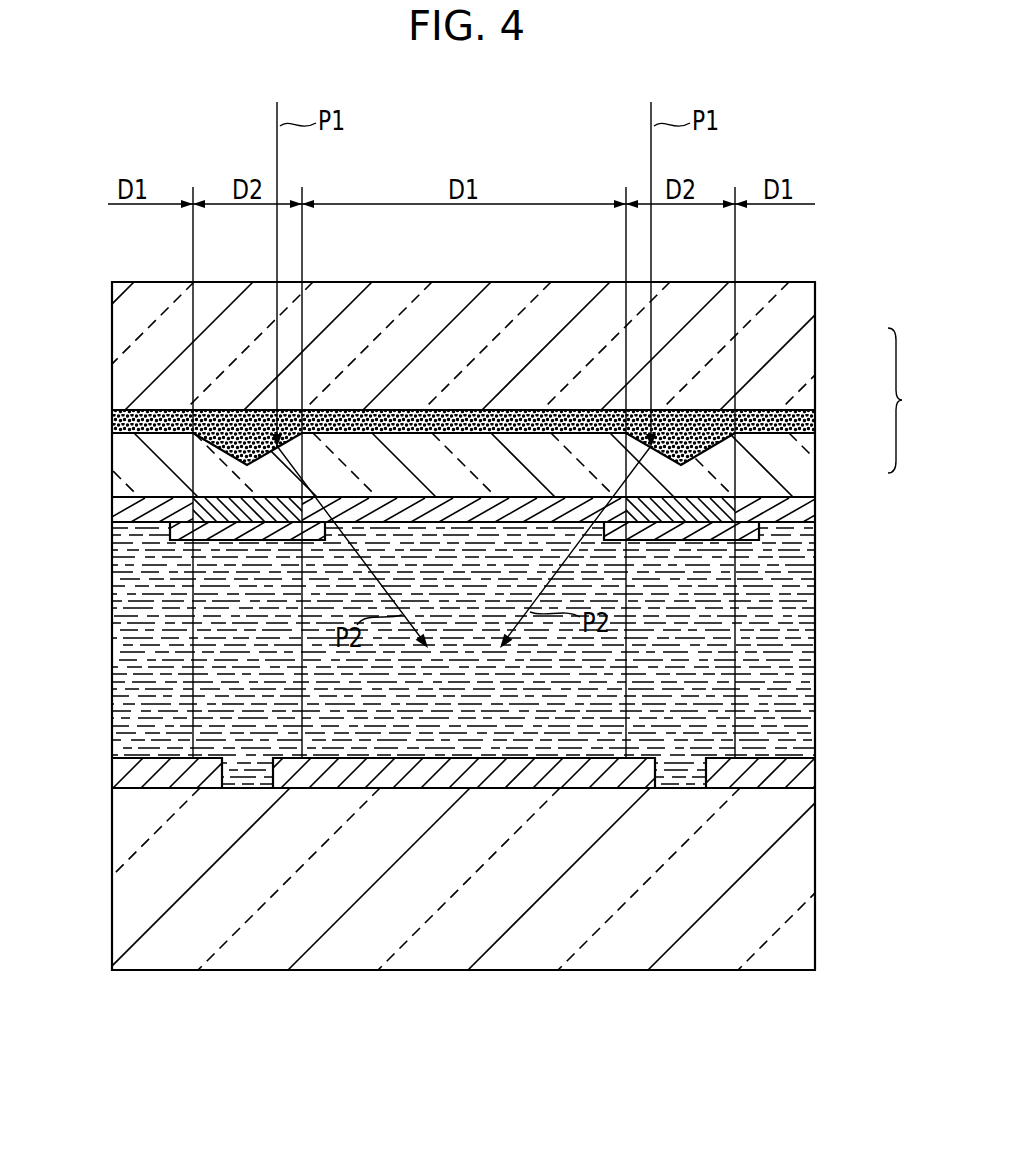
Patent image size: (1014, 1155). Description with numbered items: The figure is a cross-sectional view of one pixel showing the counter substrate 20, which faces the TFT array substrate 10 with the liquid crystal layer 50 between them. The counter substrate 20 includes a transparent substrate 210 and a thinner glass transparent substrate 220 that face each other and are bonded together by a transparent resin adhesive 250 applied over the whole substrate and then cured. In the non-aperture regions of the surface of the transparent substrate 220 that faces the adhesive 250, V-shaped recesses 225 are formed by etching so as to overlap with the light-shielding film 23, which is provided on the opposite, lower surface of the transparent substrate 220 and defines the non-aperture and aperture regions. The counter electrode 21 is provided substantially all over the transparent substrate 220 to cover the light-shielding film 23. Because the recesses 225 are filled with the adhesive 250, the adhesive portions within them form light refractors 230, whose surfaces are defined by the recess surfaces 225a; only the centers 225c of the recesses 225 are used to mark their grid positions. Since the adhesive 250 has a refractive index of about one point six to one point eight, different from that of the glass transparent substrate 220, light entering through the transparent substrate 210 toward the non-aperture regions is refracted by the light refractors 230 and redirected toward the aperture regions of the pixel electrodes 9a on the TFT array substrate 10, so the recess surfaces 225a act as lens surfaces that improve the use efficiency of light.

The TFT array substrate 10 is at (785, 876).
The pixel electrodes 9a is at (278, 769).
The liquid crystal layer 50 is at (785, 641).
The counter electrode 21 is at (800, 506).
The light-shielding film 23 is at (170, 533).
The counter substrate 20 is at (911, 400).
The transparent substrate 210 is at (800, 339).
The adhesive 250 is at (805, 421).
The transparent substrate 220 is at (800, 459).
The light refractors 230 is at (242, 436).
The recesses 225 is at (200, 456).
The recess surfaces 225a is at (275, 541).
The centers 225c is at (190, 494).